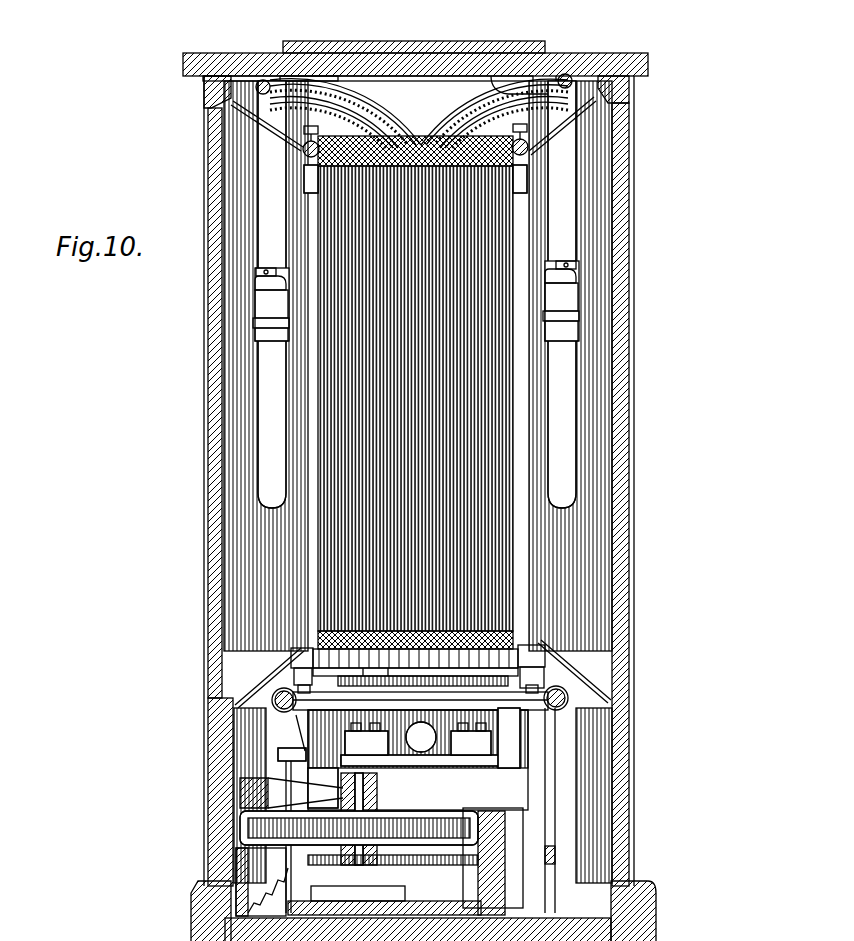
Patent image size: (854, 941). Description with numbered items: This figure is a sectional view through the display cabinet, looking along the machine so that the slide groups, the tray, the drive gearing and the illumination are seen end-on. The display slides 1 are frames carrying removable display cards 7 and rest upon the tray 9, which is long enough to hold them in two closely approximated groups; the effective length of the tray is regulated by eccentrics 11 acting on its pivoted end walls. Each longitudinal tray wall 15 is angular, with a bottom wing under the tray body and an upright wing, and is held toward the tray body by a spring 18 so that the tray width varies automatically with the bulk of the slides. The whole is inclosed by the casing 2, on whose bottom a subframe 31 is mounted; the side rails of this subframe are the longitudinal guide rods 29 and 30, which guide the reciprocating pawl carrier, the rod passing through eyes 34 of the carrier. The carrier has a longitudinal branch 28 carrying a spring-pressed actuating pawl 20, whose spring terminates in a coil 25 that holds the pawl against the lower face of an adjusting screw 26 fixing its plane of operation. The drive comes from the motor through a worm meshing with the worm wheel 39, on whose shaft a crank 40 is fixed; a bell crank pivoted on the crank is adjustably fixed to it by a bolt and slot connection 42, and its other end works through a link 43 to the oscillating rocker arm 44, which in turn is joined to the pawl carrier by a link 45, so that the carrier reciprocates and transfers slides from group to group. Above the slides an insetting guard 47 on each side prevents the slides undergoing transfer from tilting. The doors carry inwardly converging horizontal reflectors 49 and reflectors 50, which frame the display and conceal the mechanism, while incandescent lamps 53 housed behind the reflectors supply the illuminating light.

The display slide 1 is at (318, 633).
The casing 2 is at (583, 822).
The display card 7 is at (300, 569).
The tray 9 is at (365, 684).
The eccentric 11 is at (380, 757).
The longitudinal tray wall 15 is at (415, 683).
The spring 18 is at (387, 684).
The actuating pawl 20 is at (290, 652).
The coil 25 is at (422, 680).
The screw 26 is at (292, 640).
The pawl carrier branch 28 is at (423, 687).
The guide rod 29 is at (578, 705).
The guide rod 30 is at (264, 696).
The subframe 31 is at (540, 838).
The eye 34 is at (551, 702).
The worm wheel 39 is at (245, 828).
The crank 40 is at (378, 772).
The bolt and slot connection 42 is at (318, 786).
The link 43 is at (345, 737).
The rocker arm 44 is at (440, 757).
The link 45 is at (500, 748).
The insetting guard 47 is at (333, 127).
The horizontal reflector 49 is at (565, 70).
The reflector 50 is at (588, 113).
The incandescent lamp 53 is at (256, 395).